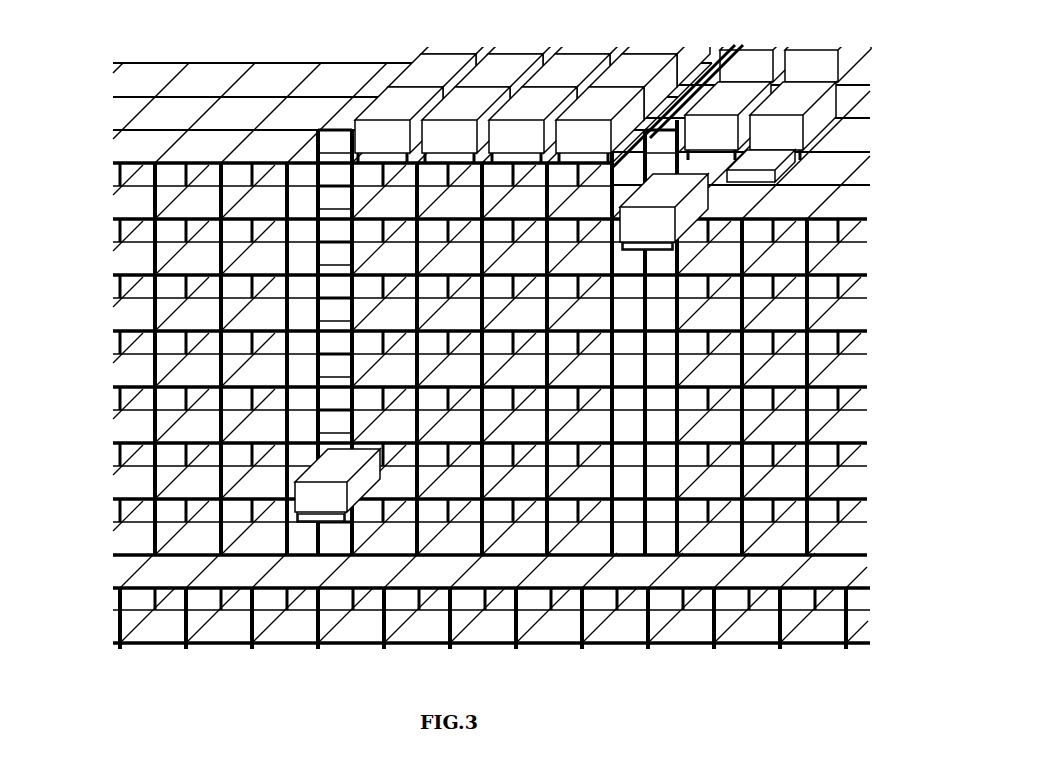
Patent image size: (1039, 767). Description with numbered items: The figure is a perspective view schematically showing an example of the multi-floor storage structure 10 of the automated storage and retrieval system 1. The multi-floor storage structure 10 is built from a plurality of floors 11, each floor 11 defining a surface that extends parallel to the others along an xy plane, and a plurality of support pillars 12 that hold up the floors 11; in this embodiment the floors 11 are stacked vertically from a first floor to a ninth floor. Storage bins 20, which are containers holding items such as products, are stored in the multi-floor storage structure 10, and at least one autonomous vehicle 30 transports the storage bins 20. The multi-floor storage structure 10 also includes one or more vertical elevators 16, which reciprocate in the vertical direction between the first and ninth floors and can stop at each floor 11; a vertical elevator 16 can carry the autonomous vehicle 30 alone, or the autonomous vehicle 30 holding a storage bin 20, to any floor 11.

The automated storage and retrieval system 1 is at (481, 351).
The multi-floor storage structure 10 is at (695, 48).
The floor 11 is at (855, 202).
The support pillar 12 is at (818, 262).
The vertical elevator 16 is at (845, 332).
The storage bin 20 is at (630, 70).
The autonomous vehicle 30 is at (585, 95).